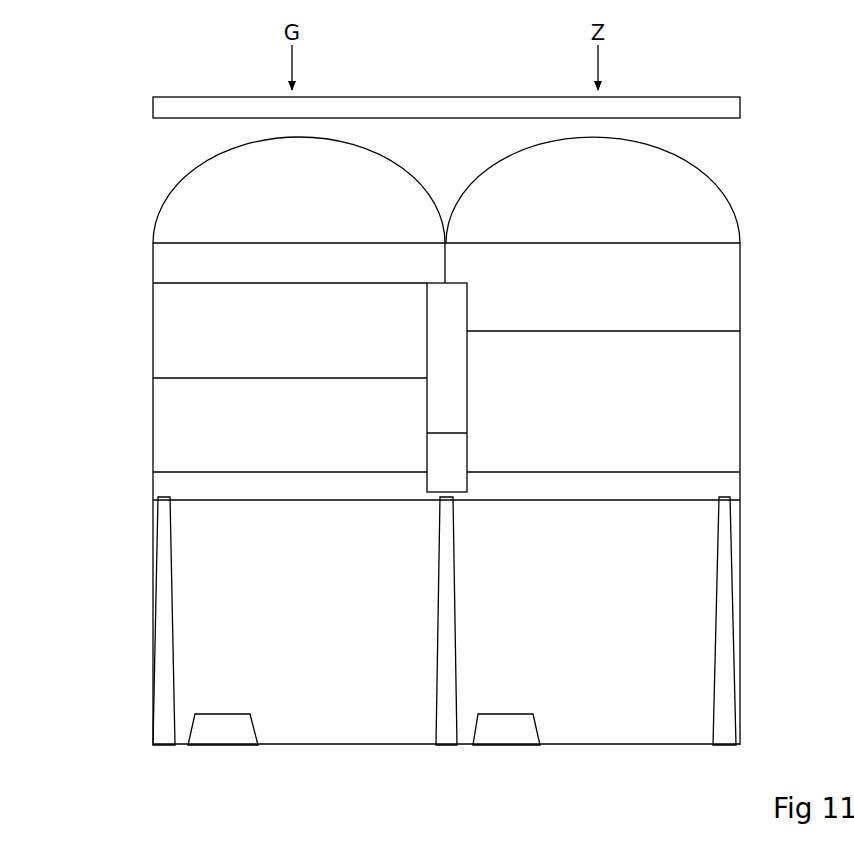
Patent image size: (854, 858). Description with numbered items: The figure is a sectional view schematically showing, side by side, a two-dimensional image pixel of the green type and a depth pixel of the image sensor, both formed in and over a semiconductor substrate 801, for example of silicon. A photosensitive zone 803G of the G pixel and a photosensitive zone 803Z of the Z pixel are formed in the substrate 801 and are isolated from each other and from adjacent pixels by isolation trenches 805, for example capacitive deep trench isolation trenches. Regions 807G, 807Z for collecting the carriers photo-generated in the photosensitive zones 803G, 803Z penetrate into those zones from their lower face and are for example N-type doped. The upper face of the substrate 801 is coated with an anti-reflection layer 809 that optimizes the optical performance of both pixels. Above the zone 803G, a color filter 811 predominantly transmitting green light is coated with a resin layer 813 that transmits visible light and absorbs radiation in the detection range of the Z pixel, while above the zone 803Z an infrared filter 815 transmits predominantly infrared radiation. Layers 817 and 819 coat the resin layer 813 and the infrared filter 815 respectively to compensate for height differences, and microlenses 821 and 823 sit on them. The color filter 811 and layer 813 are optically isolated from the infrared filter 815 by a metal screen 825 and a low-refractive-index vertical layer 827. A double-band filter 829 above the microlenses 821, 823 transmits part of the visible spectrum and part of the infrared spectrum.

The filter 829 is at (125, 108).
The microlens 821 is at (284, 211).
The microlens 823 is at (581, 211).
The layer 817 is at (284, 276).
The layer 819 is at (583, 302).
The resin layer 813 is at (286, 341).
The color filter 811 is at (286, 431).
The infrared filter 815 is at (587, 409).
The vertical layer 827 is at (447, 376).
The screen 825 is at (452, 451).
The anti-reflection layer 809 is at (125, 484).
The isolation trenches 805 is at (165, 600).
The substrate 801 is at (115, 659).
The photosensitive zone 803G is at (284, 611).
The photosensitive zone 803Z is at (572, 611).
The region 807G is at (227, 730).
The region 807Z is at (507, 728).